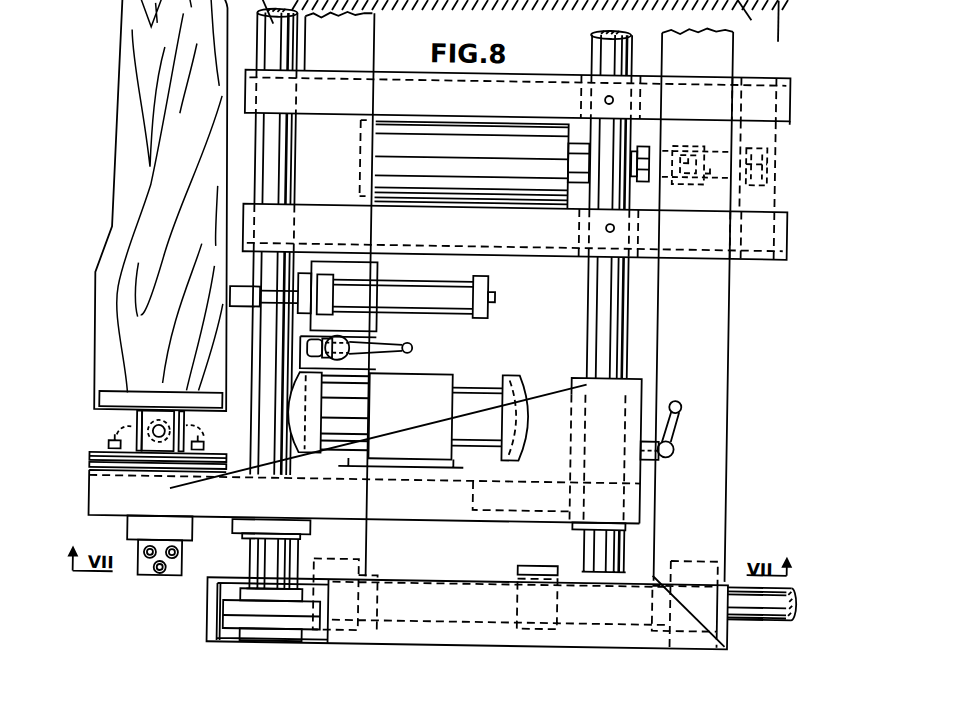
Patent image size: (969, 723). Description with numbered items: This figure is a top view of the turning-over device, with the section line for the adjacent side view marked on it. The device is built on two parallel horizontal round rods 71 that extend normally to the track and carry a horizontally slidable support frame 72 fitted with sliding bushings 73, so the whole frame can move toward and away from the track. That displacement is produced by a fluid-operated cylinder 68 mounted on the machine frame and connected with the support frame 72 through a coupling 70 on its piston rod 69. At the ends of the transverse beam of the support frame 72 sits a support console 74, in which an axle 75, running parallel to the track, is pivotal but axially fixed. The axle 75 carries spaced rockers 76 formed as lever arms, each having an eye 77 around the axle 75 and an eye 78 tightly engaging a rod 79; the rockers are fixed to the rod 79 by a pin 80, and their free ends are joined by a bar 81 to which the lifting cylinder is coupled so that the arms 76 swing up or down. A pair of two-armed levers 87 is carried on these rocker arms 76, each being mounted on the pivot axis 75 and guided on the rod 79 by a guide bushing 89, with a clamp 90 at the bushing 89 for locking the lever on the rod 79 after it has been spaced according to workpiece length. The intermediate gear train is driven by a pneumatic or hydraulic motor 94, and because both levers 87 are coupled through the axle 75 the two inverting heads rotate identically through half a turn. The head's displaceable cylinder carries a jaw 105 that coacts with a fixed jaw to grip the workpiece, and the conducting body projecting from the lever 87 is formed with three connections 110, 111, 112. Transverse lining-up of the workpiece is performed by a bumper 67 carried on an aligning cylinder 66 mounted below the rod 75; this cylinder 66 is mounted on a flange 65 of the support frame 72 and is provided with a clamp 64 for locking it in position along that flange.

The clamp 64 is at (412, 349).
The flange 65 is at (361, 319).
The aligning cylinder 66 is at (432, 298).
The bumper 67 is at (229, 292).
The fluid-operated cylinder 68 is at (510, 168).
The piston rod 69 is at (635, 145).
The coupling 70 is at (684, 182).
The round rod 71 is at (761, 633).
The support frame 72 is at (481, 577).
The sliding bushing 73 is at (756, 21).
The support console 74 is at (239, 612).
The axle 75 is at (270, 558).
The rocker 76 is at (519, 91).
The eye 77 is at (294, 101).
The eye 78 is at (583, 88).
The rod 79 is at (603, 346).
The pin 80 is at (602, 95).
The bar 81 is at (758, 194).
The two-armed lever 87 is at (433, 511).
The guide bushing 89 is at (634, 390).
The clamp 90 is at (676, 447).
The motor 94 is at (478, 397).
The jaw 105 is at (130, 405).
The connection 110 is at (156, 580).
The connection 111 is at (143, 550).
The connection 112 is at (185, 556).